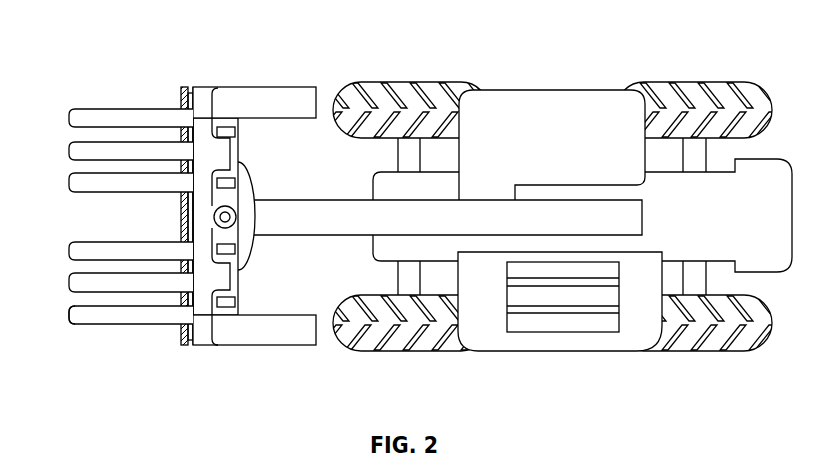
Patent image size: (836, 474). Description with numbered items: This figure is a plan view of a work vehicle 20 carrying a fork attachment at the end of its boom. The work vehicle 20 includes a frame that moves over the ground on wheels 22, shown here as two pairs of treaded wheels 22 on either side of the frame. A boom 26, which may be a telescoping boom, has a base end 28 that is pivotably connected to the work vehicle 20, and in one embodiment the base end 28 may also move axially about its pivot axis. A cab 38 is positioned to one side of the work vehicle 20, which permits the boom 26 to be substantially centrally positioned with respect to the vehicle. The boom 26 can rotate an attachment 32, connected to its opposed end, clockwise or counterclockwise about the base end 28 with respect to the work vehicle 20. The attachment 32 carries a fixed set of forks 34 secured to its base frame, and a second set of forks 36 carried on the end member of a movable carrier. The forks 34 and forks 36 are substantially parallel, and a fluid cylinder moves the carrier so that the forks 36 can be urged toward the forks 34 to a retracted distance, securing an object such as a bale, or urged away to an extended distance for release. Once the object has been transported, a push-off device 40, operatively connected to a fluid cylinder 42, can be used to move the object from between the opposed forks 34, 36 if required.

The work vehicle 20 is at (529, 215).
The wheels 22 is at (710, 82).
The boom 26 is at (490, 198).
The base end 28 is at (645, 219).
The attachment 32 is at (165, 209).
The forks 34 is at (106, 326).
The forks 36 is at (73, 315).
The cab 38 is at (567, 332).
The push-off device 40 is at (185, 87).
The fluid cylinder 42 is at (255, 87).